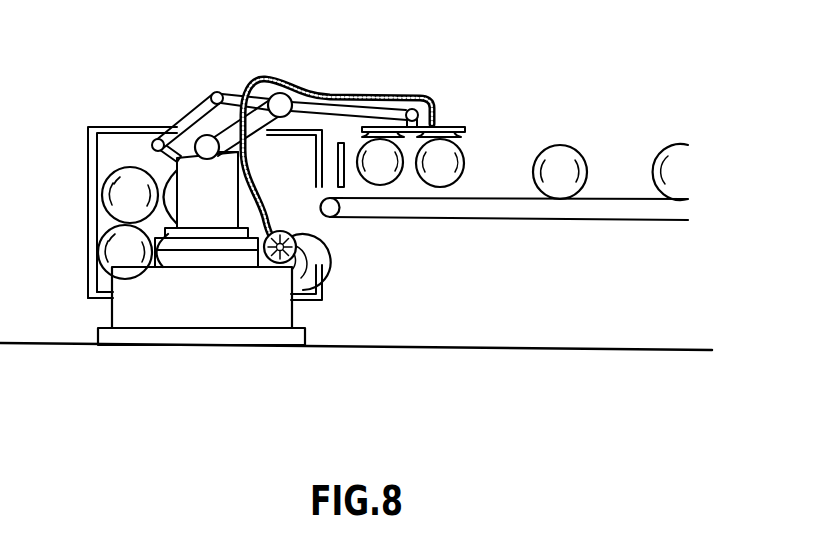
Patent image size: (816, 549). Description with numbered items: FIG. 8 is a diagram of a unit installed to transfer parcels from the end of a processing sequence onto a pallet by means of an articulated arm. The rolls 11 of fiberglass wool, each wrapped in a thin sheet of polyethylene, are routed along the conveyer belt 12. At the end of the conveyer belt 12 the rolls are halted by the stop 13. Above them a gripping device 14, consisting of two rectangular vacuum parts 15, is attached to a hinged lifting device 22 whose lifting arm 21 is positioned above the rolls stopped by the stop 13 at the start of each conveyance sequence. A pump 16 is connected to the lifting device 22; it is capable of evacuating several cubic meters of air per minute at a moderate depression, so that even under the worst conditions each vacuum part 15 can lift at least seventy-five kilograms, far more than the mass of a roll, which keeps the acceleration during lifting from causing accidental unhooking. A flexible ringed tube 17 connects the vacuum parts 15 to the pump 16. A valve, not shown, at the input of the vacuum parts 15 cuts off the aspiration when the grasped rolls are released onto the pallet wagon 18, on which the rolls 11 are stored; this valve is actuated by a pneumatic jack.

The rolls 11 is at (466, 167).
The conveyer belt 12 is at (403, 200).
The stop 13 is at (336, 173).
The gripping device 14 is at (449, 124).
The vacuum parts 15 is at (470, 134).
The pump 16 is at (298, 240).
The flexible ringed tube 17 is at (289, 77).
The pallet wagon 18 is at (88, 196).
The lifting arm 21 is at (358, 99).
The hinged lifting device 22 is at (205, 192).